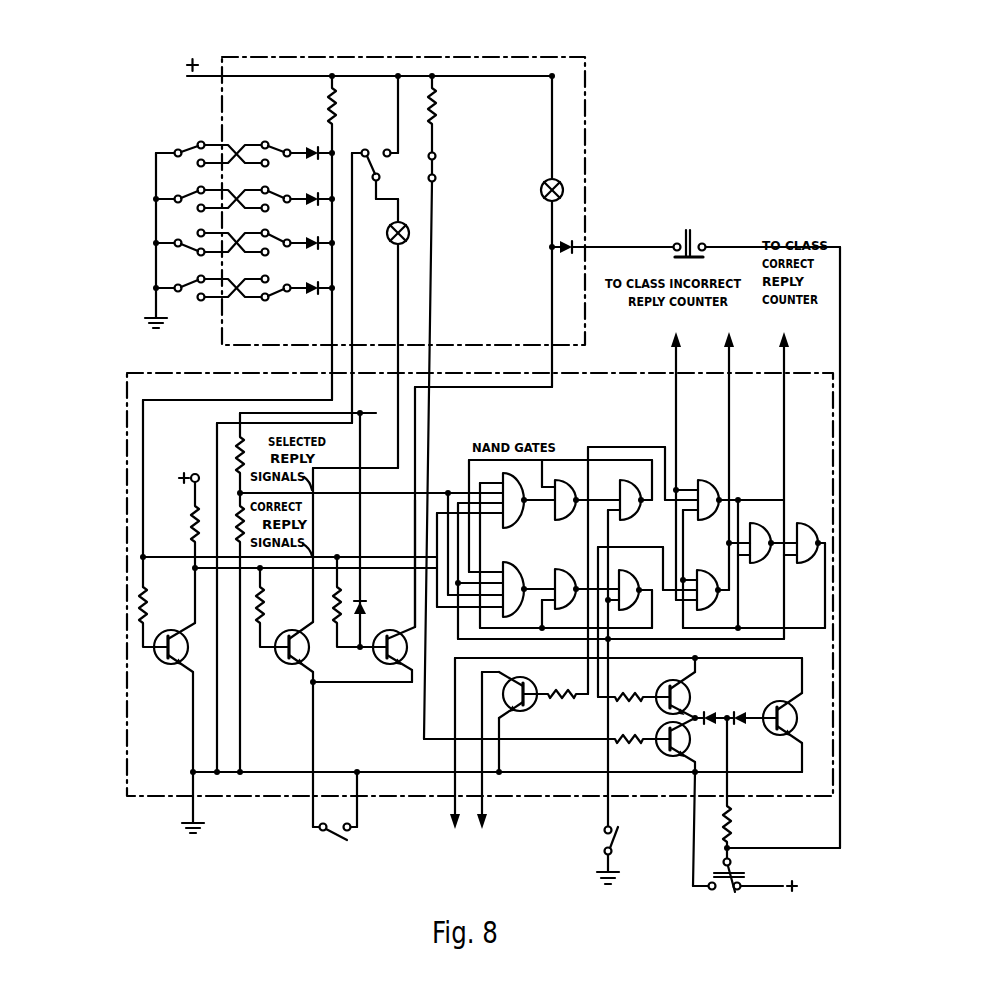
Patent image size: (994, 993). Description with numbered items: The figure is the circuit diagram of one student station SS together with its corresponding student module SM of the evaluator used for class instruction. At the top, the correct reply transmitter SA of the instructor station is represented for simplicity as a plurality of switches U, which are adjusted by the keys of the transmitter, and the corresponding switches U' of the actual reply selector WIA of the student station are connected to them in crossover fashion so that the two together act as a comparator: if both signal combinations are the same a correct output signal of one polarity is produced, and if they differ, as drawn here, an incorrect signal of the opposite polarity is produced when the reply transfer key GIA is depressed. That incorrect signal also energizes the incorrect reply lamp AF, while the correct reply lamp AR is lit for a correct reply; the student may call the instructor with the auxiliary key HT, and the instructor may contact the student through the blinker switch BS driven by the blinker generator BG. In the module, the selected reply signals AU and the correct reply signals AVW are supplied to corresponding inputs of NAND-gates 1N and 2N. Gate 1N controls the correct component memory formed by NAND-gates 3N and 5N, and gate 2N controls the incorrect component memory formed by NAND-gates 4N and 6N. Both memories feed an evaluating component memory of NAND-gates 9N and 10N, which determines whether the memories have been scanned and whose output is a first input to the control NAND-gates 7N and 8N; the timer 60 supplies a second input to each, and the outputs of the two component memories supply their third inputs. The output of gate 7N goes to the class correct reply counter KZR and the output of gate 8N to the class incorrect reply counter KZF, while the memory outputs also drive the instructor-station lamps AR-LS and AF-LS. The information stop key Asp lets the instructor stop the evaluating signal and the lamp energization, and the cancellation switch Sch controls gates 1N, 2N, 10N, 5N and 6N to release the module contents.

The correct reply transmitter SA is at (290, 136).
The switches U is at (184, 209).
The switches U' is at (285, 209).
The actual reply selector WIA is at (278, 295).
The reply transfer key GIA is at (375, 53).
The auxiliary key HT is at (436, 166).
The incorrect reply indicating lamp AF is at (407, 241).
The correct reply indicating lamp AR is at (542, 182).
The student station SS is at (502, 292).
The blinker switch BS is at (675, 243).
The timer 60 is at (643, 460).
The class incorrect reply counter KZF is at (731, 302).
The class correct reply counter KZR is at (814, 298).
The student module SM is at (491, 425).
The NAND-gate 1N is at (521, 512).
The NAND-gate 2N is at (521, 575).
The NAND-gate 3N is at (571, 516).
The NAND-gate 4N is at (576, 568).
The NAND-gate 5N is at (631, 486).
The NAND-gate 6N is at (630, 576).
The NAND-gate 7N is at (707, 485).
The NAND-gate 8N is at (706, 575).
The NAND-gate 9N is at (758, 529).
The NAND-gate 10N is at (811, 523).
The selected reply signals AU is at (403, 495).
The correct reply signals AVW is at (368, 560).
The information stop key Asp is at (333, 841).
The cancellation switch Sch is at (609, 717).
The blinker generator BG is at (731, 867).
The incorrect reply indicating lamp at instructor station AF-LS is at (462, 772).
The correct reply indicating lamp at instructor station AR-LS is at (500, 779).